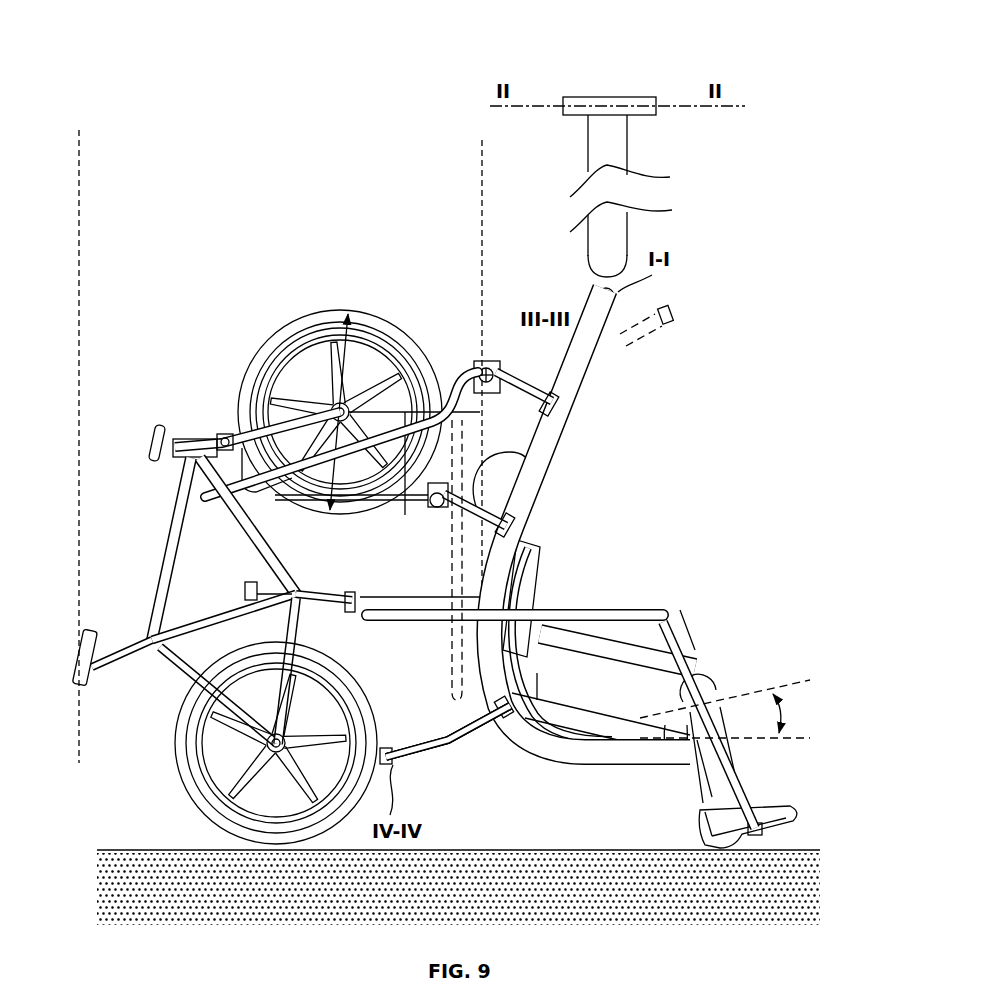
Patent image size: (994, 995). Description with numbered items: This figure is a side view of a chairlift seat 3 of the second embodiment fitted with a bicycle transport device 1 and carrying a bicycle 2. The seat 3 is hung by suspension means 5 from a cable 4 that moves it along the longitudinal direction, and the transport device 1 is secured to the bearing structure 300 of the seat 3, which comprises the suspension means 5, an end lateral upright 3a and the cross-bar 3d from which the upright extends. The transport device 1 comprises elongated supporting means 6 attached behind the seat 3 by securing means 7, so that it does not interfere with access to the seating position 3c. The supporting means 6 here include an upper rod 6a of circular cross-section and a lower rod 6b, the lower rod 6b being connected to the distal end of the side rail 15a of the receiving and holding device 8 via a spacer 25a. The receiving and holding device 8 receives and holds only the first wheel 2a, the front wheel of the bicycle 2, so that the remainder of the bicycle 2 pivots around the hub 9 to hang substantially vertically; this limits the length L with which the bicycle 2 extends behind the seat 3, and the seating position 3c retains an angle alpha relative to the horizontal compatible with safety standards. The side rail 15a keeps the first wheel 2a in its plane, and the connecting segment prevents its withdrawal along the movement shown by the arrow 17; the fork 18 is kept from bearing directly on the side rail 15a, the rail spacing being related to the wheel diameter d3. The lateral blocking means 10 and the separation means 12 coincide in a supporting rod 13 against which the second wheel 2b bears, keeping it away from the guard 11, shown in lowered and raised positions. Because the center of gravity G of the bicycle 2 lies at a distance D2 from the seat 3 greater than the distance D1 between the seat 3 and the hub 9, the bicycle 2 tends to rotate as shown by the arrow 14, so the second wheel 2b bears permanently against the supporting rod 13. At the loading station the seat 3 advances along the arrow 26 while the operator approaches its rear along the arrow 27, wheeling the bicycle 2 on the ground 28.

The bicycle transport device 1 is at (403, 327).
The bicycle 2 is at (150, 607).
The first wheel 2a is at (266, 358).
The second wheel 2b is at (180, 724).
The chairlift seat 3 is at (522, 742).
The end lateral upright 3a is at (540, 470).
The seating position 3c is at (618, 700).
The cross-bar 3d is at (600, 290).
The cable 4 is at (612, 95).
The suspension means 5 is at (636, 155).
The supporting means 6 is at (453, 362).
The upper rod 6a is at (482, 358).
The lower rod 6b is at (438, 509).
The securing means 7 is at (596, 398).
The receiving and holding device 8 is at (264, 506).
The hub 9 is at (333, 405).
The lateral blocking means 10 is at (402, 765).
The separation means 12 is at (448, 731).
The guard 11 is at (683, 637).
The supporting rod 13 is at (395, 745).
The arrow 14 is at (165, 838).
The side rail 15a is at (342, 502).
The arrow 17 is at (185, 332).
The fork 18 is at (258, 398).
The spacer 25a is at (305, 503).
The arrow 26 is at (725, 53).
The arrow 27 is at (183, 398).
The ground 28 is at (582, 848).
The bearing structure 300 is at (638, 293).
The center of gravity G is at (245, 594).
The length L is at (478, 165).
The distance D1 is at (414, 476).
The distance D2 is at (420, 618).
The diameter d3 is at (345, 322).
The angle alpha is at (725, 709).